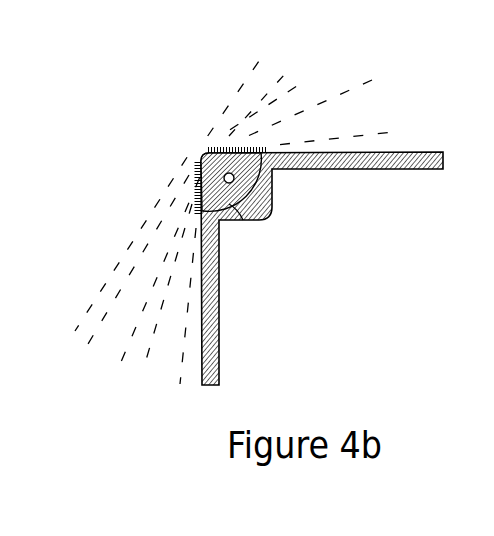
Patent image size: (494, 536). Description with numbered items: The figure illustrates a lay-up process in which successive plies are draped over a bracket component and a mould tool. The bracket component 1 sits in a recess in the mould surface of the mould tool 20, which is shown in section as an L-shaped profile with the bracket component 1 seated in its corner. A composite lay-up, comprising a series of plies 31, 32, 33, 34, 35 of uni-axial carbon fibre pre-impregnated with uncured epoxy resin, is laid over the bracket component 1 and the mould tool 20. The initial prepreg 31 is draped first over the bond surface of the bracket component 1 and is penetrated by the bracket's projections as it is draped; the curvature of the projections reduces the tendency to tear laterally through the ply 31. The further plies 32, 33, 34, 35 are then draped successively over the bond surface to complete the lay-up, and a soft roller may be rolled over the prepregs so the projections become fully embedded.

The bracket component 1 is at (240, 220).
The mould tool 20 is at (289, 202).
The initial prepreg 31 is at (393, 132).
The ply 32 is at (342, 95).
The ply 33 is at (320, 69).
The ply 34 is at (273, 76).
The ply 35 is at (235, 97).